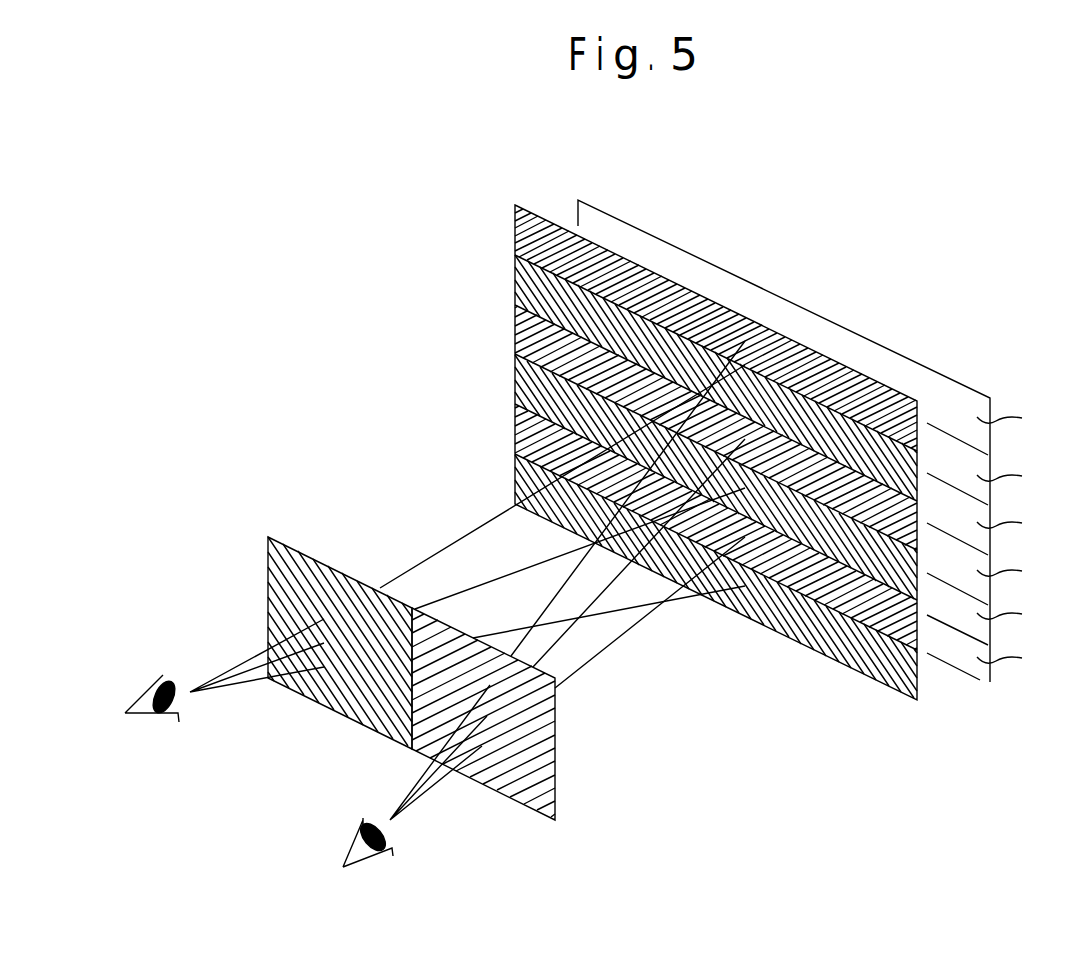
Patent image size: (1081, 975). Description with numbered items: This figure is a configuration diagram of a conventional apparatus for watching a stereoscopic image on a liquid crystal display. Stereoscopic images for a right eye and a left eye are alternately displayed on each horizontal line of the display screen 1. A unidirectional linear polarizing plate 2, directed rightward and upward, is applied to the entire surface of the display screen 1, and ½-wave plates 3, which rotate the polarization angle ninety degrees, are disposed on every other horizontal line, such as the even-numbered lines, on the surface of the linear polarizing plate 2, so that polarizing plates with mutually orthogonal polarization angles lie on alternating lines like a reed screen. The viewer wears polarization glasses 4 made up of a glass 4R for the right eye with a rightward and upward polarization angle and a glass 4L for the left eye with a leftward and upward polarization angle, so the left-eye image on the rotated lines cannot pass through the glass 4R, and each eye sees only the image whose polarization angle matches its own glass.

The display screen 1 is at (783, 285).
The unidirectional linear polarizing plate 2 is at (507, 223).
The ½-wave plate 3 is at (510, 497).
The polarization glasses 4 is at (463, 712).
The glass for a left eye 4L is at (345, 700).
The glass for a right eye 4R is at (515, 790).